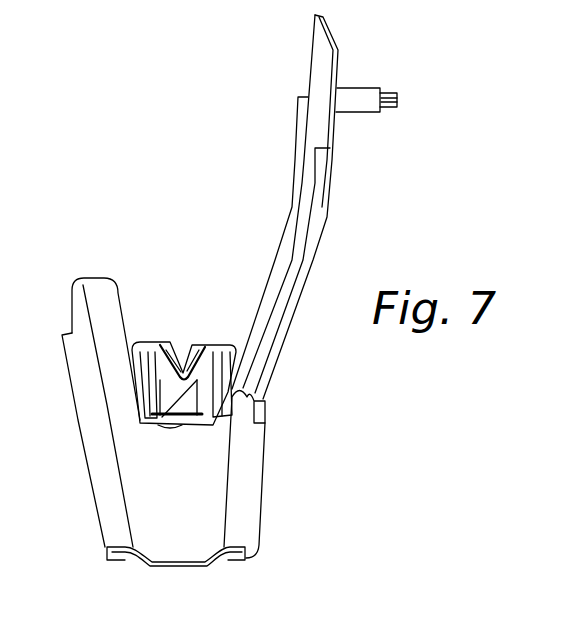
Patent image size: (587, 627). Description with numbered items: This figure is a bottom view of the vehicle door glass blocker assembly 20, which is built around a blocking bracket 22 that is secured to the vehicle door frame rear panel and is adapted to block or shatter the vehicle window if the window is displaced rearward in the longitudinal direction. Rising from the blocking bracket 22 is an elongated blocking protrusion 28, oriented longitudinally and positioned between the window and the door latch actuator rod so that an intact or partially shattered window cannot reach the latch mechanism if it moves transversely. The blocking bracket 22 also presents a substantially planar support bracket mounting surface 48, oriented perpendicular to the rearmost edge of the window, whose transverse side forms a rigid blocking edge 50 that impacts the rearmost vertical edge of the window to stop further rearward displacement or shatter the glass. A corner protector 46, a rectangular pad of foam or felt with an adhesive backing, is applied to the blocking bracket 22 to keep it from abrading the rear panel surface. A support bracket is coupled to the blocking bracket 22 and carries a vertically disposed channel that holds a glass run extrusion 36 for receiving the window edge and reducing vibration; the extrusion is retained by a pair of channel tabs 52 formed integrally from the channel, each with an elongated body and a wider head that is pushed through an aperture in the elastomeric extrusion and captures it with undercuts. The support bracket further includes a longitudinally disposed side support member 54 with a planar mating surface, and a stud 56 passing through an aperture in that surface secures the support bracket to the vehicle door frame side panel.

The vehicle door glass blocker assembly 20 is at (183, 155).
The blocking bracket 22 is at (62, 474).
The blocking protrusion 28 is at (107, 337).
The glass run extrusion 36 is at (153, 335).
The corner protector 46 is at (121, 560).
The support bracket mounting surface 48 is at (183, 497).
The blocking edge 50 is at (182, 430).
The channel tab 52 is at (216, 343).
The side support member 54 is at (327, 217).
The stud 56 is at (361, 103).